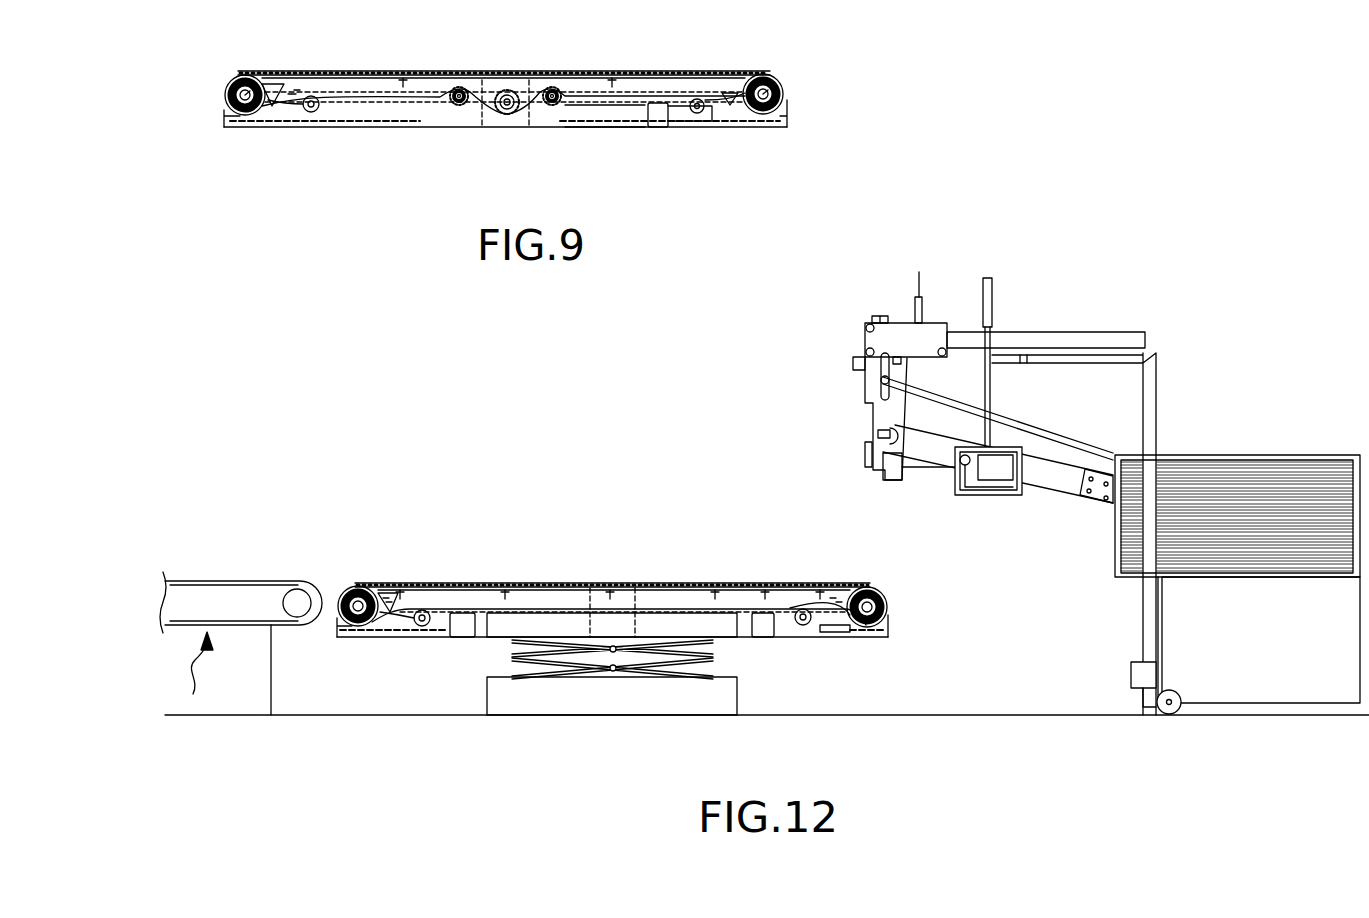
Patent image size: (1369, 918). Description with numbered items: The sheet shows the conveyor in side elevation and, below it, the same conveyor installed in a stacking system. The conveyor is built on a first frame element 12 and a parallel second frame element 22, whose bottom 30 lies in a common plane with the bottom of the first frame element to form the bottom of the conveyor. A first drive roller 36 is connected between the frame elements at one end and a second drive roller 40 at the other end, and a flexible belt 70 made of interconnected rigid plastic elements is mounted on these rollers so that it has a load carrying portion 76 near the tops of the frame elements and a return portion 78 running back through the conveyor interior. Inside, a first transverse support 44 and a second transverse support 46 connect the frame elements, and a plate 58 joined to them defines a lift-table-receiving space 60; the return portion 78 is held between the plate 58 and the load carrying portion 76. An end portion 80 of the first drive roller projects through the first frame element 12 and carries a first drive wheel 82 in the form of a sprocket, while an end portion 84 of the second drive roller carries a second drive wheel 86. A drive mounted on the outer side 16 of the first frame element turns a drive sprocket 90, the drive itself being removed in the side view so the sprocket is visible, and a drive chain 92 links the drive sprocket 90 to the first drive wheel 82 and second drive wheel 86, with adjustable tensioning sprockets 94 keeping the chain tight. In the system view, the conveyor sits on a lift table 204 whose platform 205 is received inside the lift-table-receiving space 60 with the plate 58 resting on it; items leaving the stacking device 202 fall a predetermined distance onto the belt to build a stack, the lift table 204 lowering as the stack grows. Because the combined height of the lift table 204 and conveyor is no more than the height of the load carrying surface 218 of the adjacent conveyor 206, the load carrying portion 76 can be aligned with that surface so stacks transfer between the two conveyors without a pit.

In FIG. 9, the first frame element 12 is at (663, 120).
In FIG. 9, the outer side 16 is at (623, 117).
In FIG. 12, the second frame element 22 is at (445, 597).
In FIG. 12, the bottom 30 is at (358, 640).
In FIG. 12, the first drive roller 36 is at (365, 585).
In FIG. 12, the second drive roller 40 is at (890, 607).
In FIG. 12, the first transverse support 44 is at (472, 642).
In FIG. 12, the second transverse support 46 is at (760, 640).
In FIG. 12, the plate 58 is at (558, 613).
In FIG. 9, the lift-table-receiving space 60 is at (437, 120).
In FIG. 12, the flexible belt 70 is at (683, 583).
In FIG. 12, the load carrying portion 76 is at (773, 588).
In FIG. 12, the return portion 78 is at (785, 608).
In FIG. 9, the end portion 80 is at (228, 113).
In FIG. 9, the first drive wheel 82 is at (230, 100).
In FIG. 9, the end portion 84 is at (770, 72).
In FIG. 9, the second drive wheel 86 is at (787, 90).
In FIG. 9, the drive sprocket 90 is at (517, 120).
In FIG. 9, the drive chain 92 is at (398, 110).
In FIG. 9, the tensioning sprockets 94 is at (462, 106).
In FIG. 12, the stacking device 202 is at (1275, 687).
In FIG. 12, the lift table 204 is at (740, 705).
In FIG. 12, the platform 205 is at (720, 627).
In FIG. 12, the adjacent conveyor 206 is at (181, 672).
In FIG. 12, the load carrying surface 218 is at (236, 580).